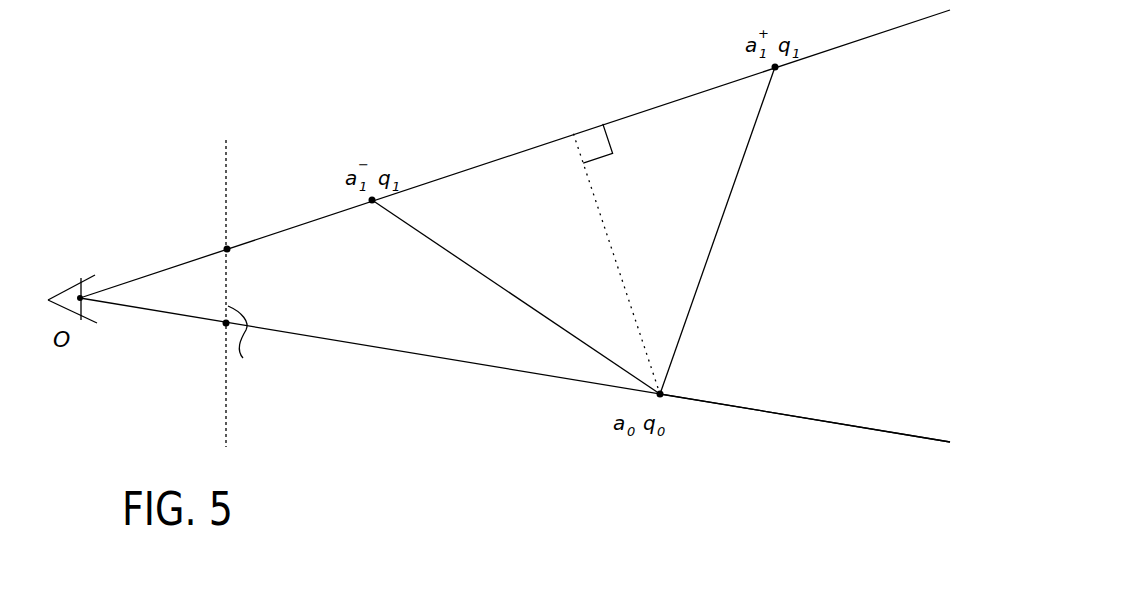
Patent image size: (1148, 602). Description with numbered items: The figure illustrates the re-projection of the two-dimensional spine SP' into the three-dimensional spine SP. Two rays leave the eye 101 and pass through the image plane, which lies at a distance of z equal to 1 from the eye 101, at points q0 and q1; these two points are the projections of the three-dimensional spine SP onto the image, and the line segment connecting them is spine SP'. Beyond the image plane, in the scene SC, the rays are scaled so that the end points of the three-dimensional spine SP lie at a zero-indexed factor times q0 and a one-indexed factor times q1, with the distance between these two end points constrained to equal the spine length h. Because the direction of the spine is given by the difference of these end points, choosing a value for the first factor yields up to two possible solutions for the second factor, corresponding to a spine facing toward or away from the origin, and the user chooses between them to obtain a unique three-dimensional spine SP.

The eye 101 is at (82, 279).
The z = 1 image plane 1 is at (229, 278).
The point q1 is at (209, 238).
The point q0 is at (231, 336).
The 3-D spine SP is at (573, 230).
The spine length h is at (612, 259).
The scene SC is at (548, 458).